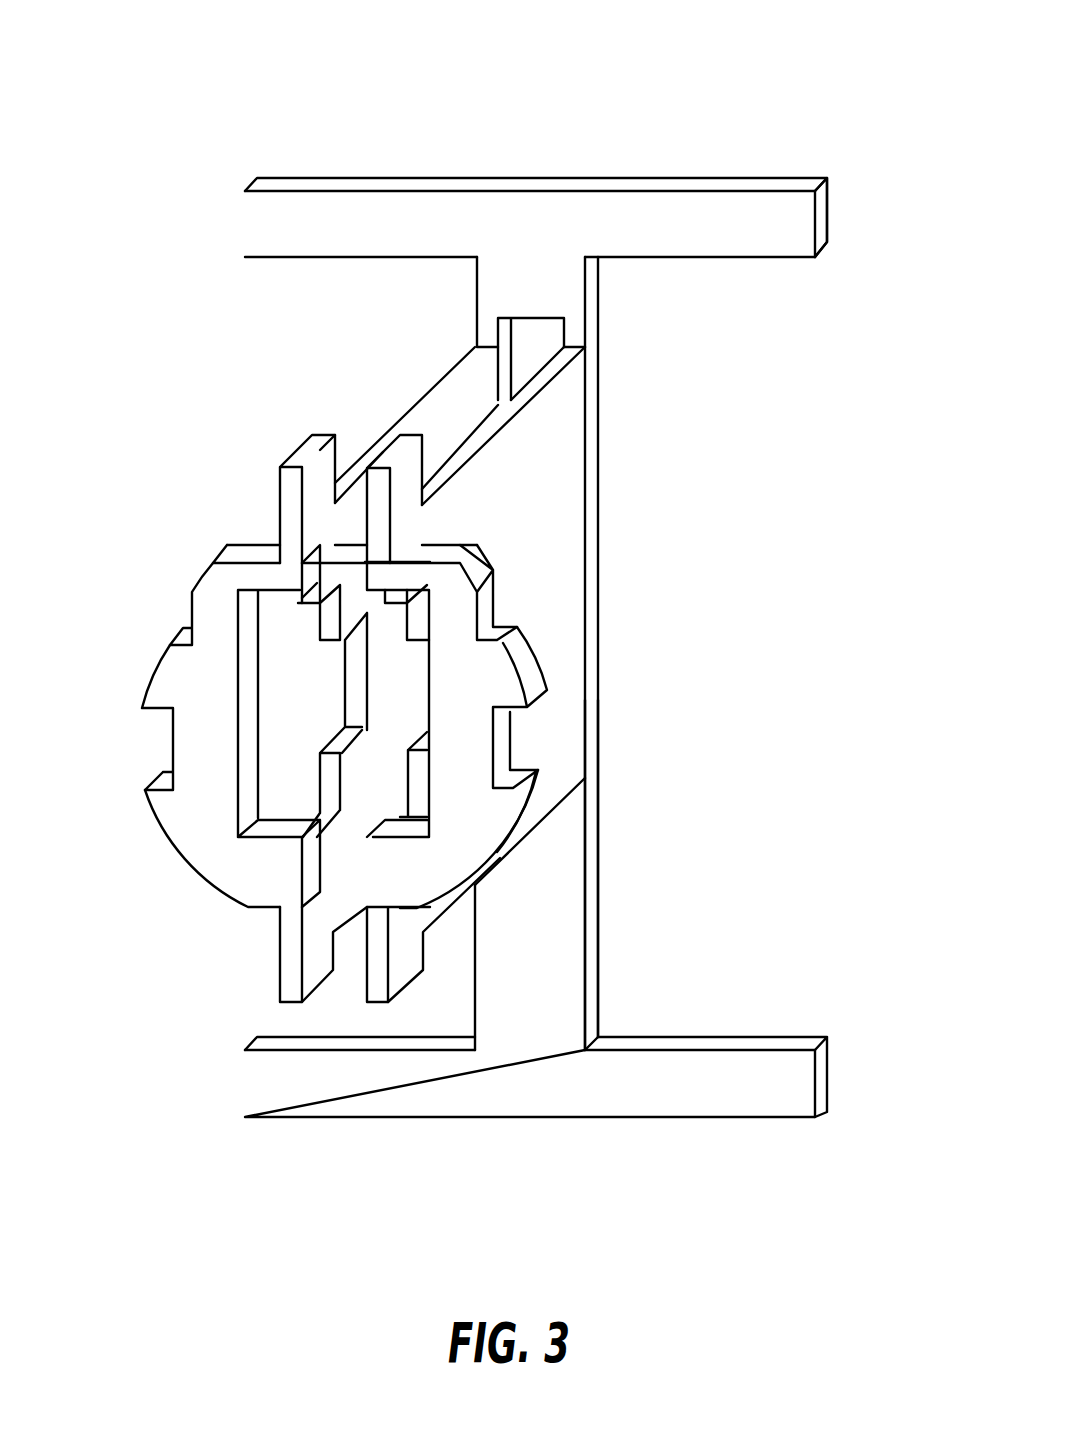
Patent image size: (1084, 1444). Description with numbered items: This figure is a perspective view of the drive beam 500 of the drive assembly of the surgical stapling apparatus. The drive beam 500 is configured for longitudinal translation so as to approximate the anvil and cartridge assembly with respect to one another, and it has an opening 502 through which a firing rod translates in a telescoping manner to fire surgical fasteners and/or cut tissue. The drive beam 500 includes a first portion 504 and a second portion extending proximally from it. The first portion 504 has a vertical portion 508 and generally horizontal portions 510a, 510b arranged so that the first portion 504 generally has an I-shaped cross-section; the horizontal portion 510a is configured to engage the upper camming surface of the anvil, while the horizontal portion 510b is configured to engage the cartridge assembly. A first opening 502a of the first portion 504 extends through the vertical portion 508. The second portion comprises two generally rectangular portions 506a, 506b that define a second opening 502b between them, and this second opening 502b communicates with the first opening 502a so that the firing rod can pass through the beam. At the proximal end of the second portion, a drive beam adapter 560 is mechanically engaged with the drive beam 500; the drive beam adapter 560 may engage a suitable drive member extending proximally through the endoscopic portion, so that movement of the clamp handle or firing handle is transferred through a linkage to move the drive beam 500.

The drive beam 500 is at (250, 60).
The opening 502 is at (514, 373).
The first opening 502a is at (517, 340).
The second opening 502b is at (347, 952).
The first portion 504 is at (818, 218).
The generally rectangular portion 506a is at (280, 510).
The generally rectangular portion 506b is at (572, 523).
The vertical portion 508 is at (598, 912).
The horizontal portion 510a is at (277, 217).
The horizontal portion 510b is at (277, 1085).
The drive beam adapter 560 is at (185, 750).